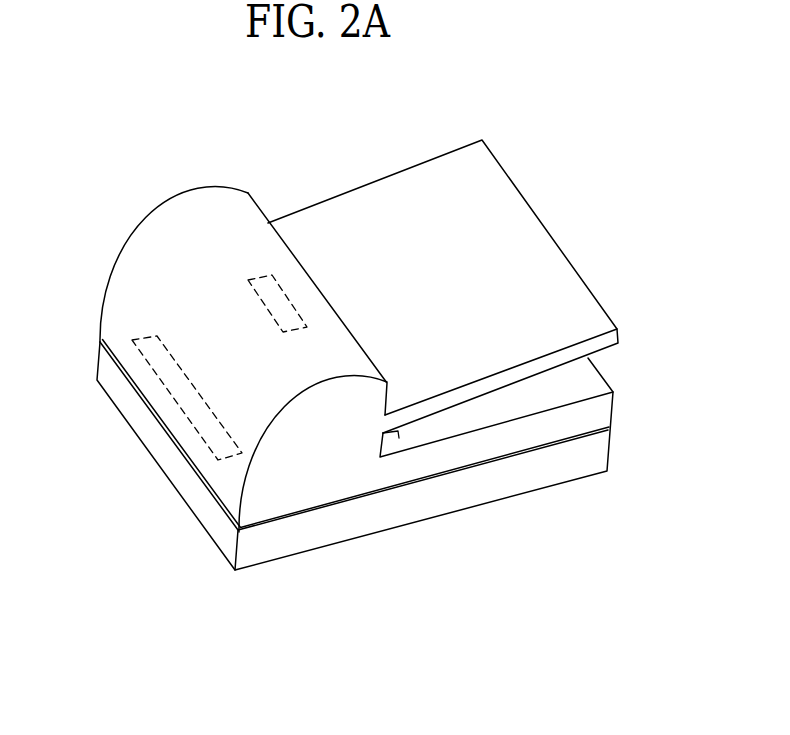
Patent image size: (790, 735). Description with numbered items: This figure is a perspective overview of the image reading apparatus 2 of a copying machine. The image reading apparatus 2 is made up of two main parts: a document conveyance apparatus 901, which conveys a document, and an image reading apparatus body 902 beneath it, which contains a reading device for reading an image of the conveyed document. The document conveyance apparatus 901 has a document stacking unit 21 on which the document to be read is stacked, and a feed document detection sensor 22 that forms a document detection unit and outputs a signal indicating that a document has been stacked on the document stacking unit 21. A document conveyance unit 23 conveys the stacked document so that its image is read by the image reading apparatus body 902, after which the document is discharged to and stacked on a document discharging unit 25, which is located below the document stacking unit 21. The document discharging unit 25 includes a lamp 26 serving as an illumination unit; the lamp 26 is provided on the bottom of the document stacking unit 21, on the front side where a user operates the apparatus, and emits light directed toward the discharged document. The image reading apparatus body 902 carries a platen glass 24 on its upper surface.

The image reading apparatus 2 is at (158, 176).
The document conveyance apparatus 901 is at (111, 246).
The image reading apparatus body 902 is at (522, 480).
The document stacking unit 21 is at (542, 228).
The feed document detection sensor 22 is at (265, 274).
The document conveyance unit 23 is at (115, 300).
The platen glass 24 is at (172, 400).
The document discharging unit 25 is at (602, 375).
The lamp 26 is at (398, 436).